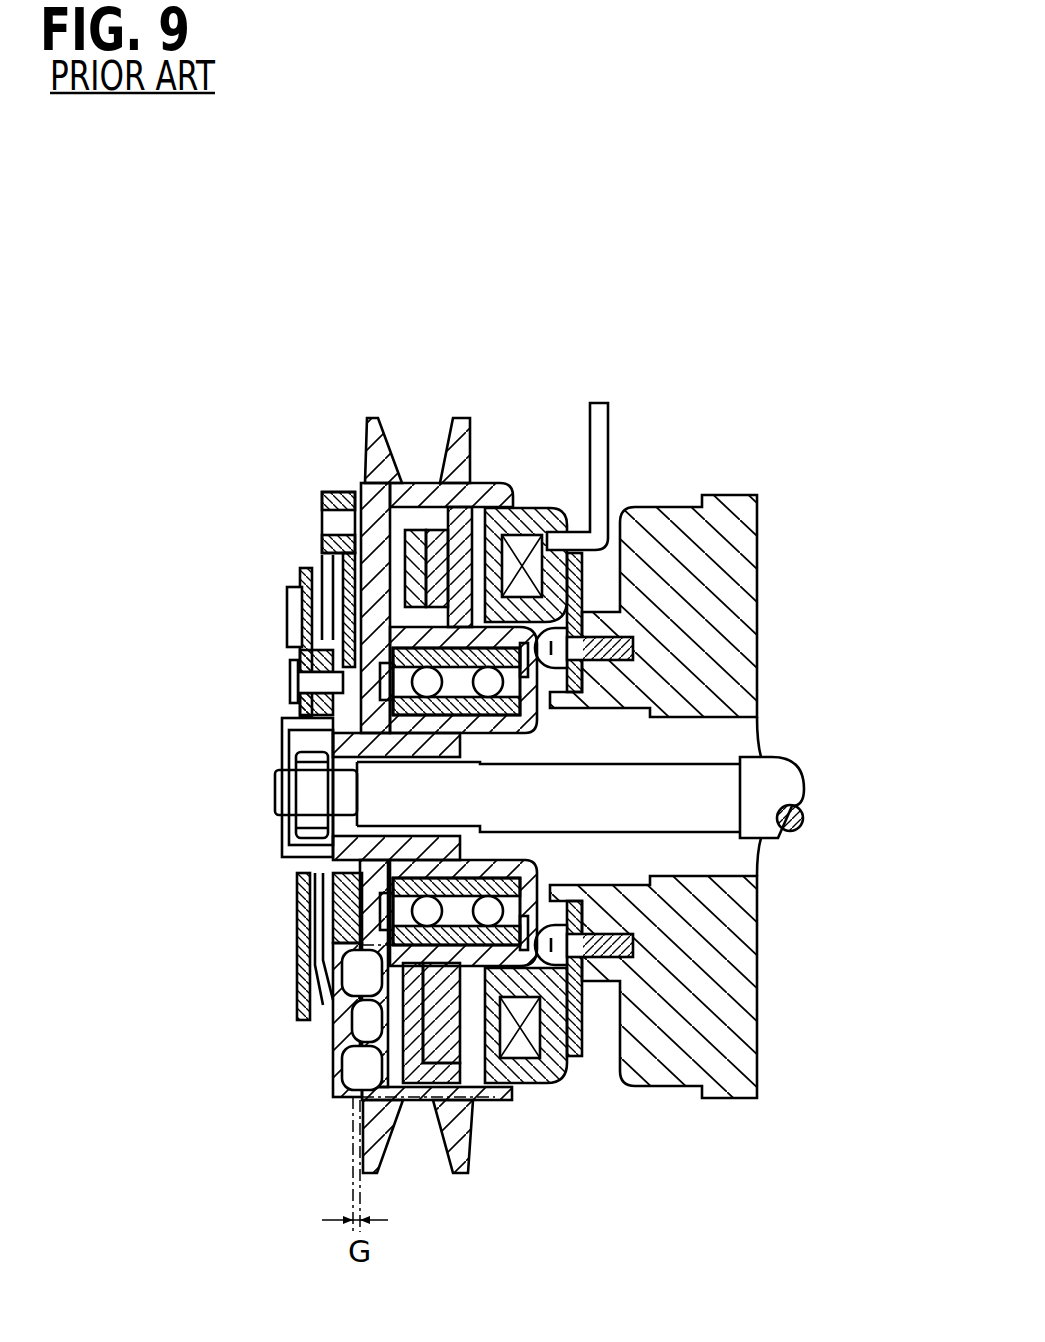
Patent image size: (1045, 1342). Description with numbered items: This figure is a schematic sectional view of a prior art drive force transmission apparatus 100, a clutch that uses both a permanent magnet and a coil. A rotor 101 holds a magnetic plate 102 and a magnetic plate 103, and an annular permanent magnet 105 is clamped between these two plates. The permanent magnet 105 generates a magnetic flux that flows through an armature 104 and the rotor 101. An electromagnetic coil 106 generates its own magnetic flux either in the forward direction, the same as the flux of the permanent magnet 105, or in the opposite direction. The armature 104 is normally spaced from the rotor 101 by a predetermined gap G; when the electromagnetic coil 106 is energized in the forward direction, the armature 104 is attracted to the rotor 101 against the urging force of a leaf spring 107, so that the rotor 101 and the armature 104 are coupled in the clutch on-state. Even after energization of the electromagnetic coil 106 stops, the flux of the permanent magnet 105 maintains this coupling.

The drive force transmission apparatus 100 is at (583, 1195).
The rotor 101 is at (465, 410).
The magnetic plate 102 is at (464, 513).
The magnetic plate 103 is at (372, 490).
The armature 104 is at (345, 563).
The annular permanent magnet 105 is at (436, 535).
The electromagnetic coil 106 is at (530, 530).
The leaf spring 107 is at (300, 608).